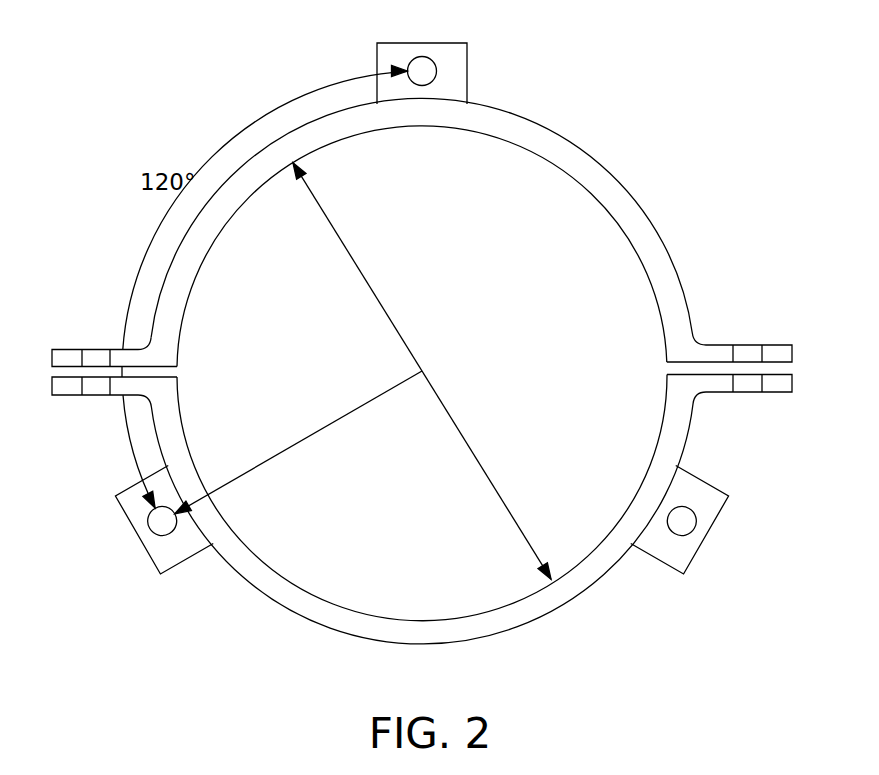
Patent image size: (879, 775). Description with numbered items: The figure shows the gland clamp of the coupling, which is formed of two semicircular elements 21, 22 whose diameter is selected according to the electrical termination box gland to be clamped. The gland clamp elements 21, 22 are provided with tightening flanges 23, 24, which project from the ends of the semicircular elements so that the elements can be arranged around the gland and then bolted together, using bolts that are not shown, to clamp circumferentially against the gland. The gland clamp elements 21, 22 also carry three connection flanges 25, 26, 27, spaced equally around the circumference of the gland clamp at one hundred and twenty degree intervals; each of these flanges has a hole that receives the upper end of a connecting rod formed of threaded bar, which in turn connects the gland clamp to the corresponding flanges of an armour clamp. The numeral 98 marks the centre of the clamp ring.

The semicircular element 21 is at (632, 193).
The semicircular element 22 is at (344, 641).
The tightening flange 23 is at (720, 345).
The tightening flange 24 is at (64, 396).
The connection flange 25 is at (467, 73).
The connection flange 26 is at (178, 574).
The connection flange 27 is at (718, 484).
The ring center axis 98 is at (363, 371).